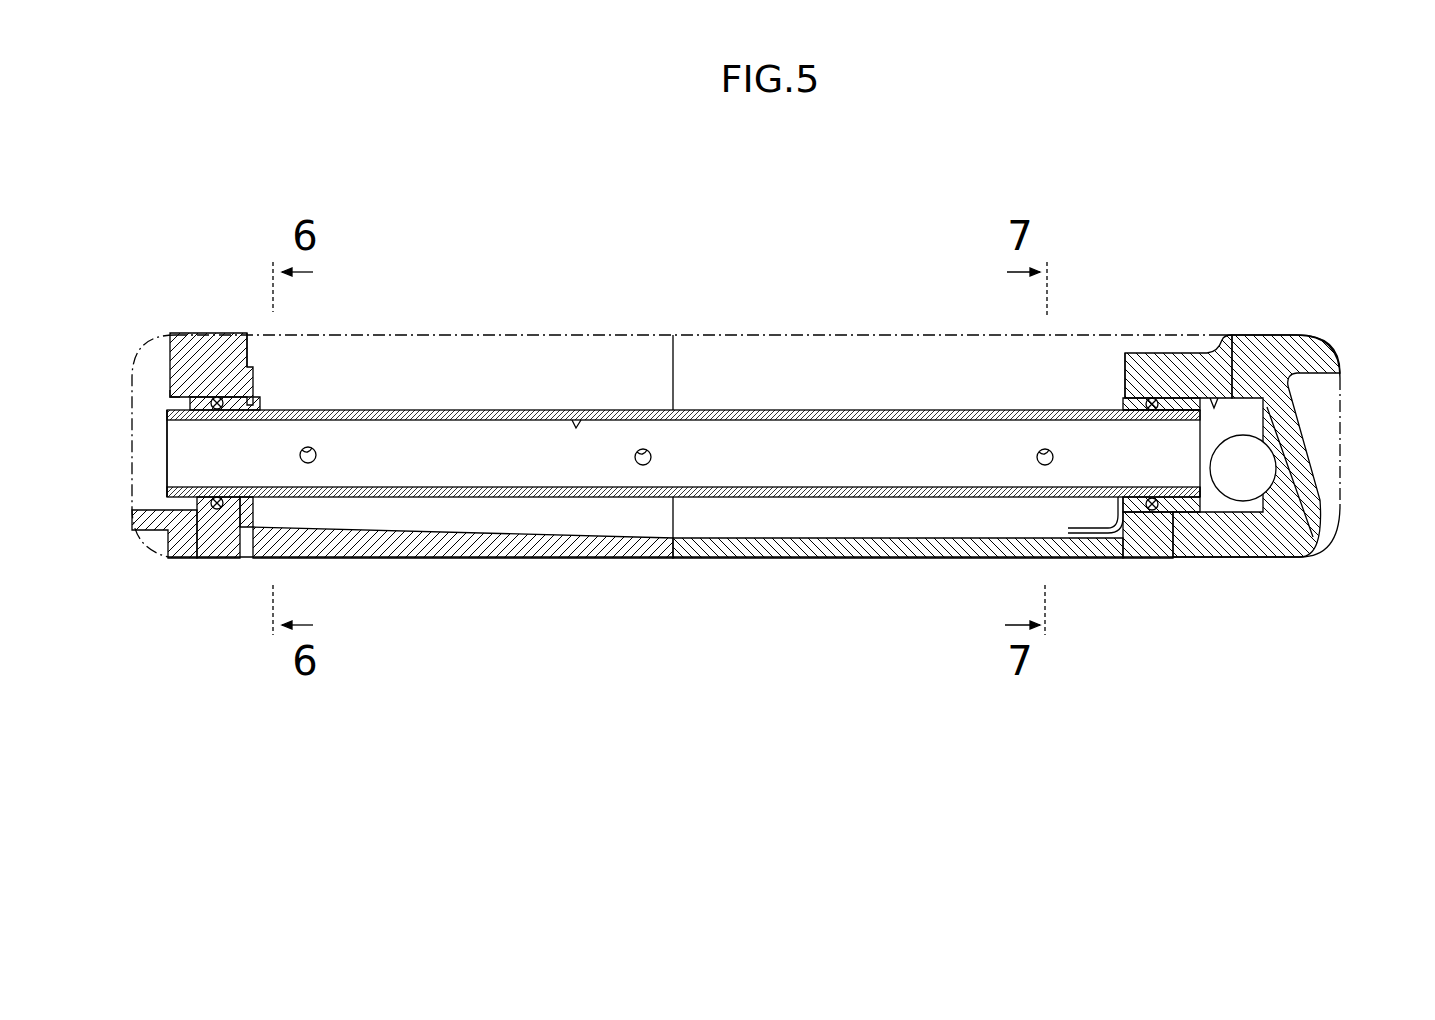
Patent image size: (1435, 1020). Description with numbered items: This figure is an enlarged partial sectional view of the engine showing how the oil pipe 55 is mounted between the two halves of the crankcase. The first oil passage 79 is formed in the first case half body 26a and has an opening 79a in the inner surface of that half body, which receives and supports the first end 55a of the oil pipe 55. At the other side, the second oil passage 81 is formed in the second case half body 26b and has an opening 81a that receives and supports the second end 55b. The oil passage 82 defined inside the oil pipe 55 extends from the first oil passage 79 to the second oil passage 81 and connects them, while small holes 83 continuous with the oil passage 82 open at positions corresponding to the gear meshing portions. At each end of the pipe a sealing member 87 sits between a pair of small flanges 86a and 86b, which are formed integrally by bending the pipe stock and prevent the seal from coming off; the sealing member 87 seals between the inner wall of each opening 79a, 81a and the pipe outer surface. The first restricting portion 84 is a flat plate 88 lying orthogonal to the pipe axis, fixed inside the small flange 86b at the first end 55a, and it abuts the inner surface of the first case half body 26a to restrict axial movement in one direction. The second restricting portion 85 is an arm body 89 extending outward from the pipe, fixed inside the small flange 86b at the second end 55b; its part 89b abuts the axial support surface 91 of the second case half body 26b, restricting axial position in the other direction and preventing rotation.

The first oil passage 79 is at (162, 348).
The opening 79a is at (165, 398).
The flat plate 88 is at (247, 345).
The first restricting portion 84 is at (258, 398).
The oil passage 82 is at (575, 424).
The oil pipe 55 is at (847, 410).
The first end 55a is at (170, 490).
The second end 55b is at (1220, 508).
The small holes 83 is at (317, 452).
The sealing member 87 is at (216, 495).
The second restricting portion 85 is at (1105, 391).
The arm body 89 is at (1118, 350).
The clip of second bearing holder 89b is at (1075, 528).
The axial support surface 91 is at (1118, 410).
The second oil passage 81 is at (1245, 452).
The opening 81a is at (1219, 402).
The first case half body 26a is at (164, 552).
The second case half body 26b is at (1318, 540).
The small flange 86a is at (196, 560).
The small flange 86b is at (238, 560).